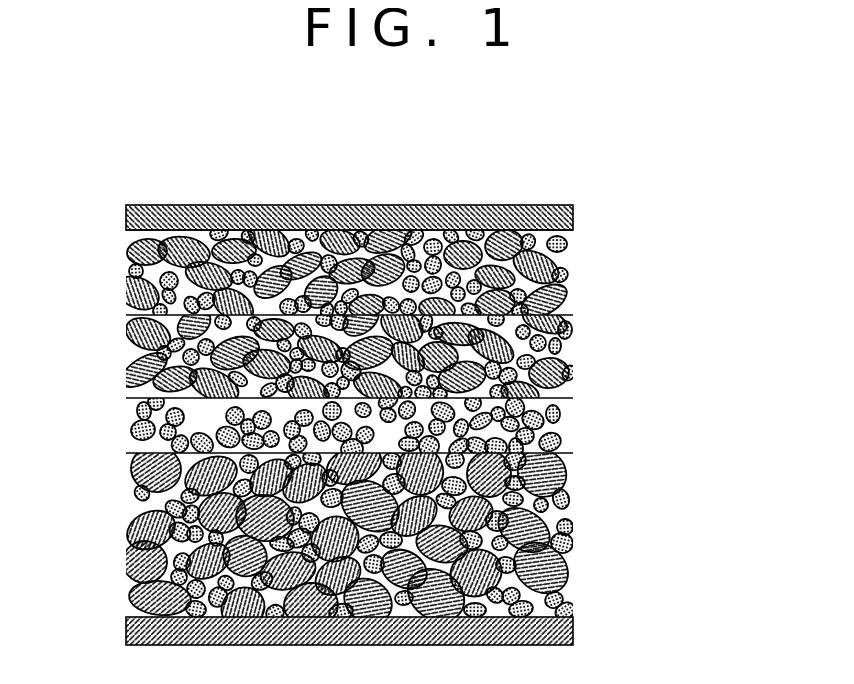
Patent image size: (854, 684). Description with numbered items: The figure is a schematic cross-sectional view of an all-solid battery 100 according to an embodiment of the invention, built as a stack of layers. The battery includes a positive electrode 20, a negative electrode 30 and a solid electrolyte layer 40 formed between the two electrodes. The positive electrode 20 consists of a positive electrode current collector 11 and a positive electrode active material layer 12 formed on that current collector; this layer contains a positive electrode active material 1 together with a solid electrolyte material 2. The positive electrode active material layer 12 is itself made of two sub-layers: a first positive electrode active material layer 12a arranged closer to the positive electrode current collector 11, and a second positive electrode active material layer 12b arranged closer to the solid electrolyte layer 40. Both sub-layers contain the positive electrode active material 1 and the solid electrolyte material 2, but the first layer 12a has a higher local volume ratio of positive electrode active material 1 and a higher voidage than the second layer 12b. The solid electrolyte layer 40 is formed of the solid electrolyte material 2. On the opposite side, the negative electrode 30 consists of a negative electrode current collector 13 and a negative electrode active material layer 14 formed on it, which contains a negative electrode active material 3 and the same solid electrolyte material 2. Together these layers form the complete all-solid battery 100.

The all-solid battery 100 is at (548, 122).
The positive electrode 20 is at (740, 193).
The positive electrode current collector 11 is at (596, 194).
The positive electrode active material layer 12 is at (668, 220).
The first positive electrode active material layer 12a is at (596, 223).
The second positive electrode active material layer 12b is at (596, 307).
The solid electrolyte layer 40 is at (596, 391).
The negative electrode 30 is at (668, 443).
The negative electrode active material layer 14 is at (596, 445).
The negative electrode current collector 13 is at (596, 609).
The positive electrode active material 1 is at (122, 332).
The solid electrolyte material 2 is at (122, 423).
The negative electrode active material 3 is at (124, 532).